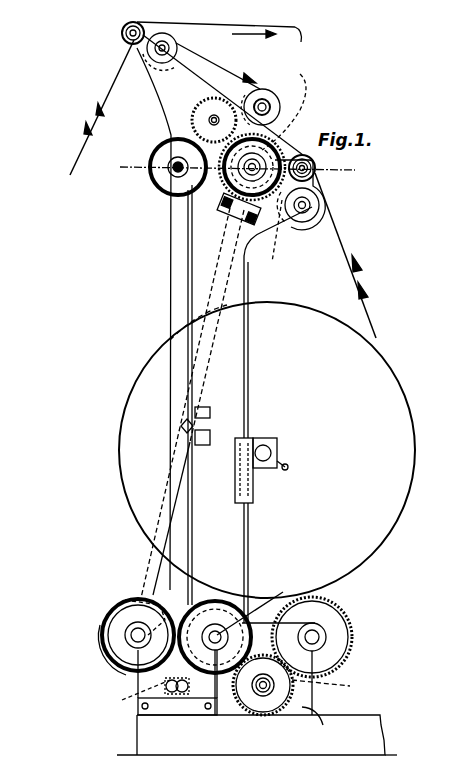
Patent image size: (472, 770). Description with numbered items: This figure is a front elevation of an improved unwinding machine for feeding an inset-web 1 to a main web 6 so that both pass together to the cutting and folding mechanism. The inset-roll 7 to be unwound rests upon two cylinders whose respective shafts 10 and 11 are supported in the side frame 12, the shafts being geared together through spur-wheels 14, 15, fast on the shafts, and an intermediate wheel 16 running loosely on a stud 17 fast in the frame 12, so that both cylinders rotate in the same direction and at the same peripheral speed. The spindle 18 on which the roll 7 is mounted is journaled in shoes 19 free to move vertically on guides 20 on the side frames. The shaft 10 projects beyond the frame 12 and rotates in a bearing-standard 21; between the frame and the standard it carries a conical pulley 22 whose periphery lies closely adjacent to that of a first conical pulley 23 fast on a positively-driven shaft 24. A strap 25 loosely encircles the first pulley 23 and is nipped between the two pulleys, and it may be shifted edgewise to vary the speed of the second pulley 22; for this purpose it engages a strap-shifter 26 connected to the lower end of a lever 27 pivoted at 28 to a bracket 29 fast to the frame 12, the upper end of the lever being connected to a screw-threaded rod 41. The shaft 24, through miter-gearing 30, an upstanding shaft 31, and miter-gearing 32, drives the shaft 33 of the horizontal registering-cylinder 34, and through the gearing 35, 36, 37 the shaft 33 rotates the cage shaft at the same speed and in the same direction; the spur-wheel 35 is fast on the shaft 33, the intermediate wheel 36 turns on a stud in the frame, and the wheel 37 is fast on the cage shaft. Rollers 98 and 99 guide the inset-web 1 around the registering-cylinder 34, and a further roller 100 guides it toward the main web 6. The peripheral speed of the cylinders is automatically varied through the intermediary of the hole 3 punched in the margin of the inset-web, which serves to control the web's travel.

The inset-web 1 is at (257, 80).
The hole 3 is at (236, 167).
The main web 6 is at (58, 150).
The inset-roll 7 is at (267, 450).
The shaft 10 is at (256, 602).
The shaft 11 is at (320, 643).
The side frame 12 is at (242, 467).
The spur-wheel 14 is at (150, 155).
The spur-wheel 15 is at (345, 638).
The intermediate wheel 16 is at (333, 691).
The stud 17 is at (275, 688).
The spindle 18 is at (272, 456).
The shoe 19 is at (254, 488).
The guide 20 is at (250, 517).
The bearing-standard 21 is at (200, 690).
The conical pulley 22 is at (215, 658).
The conical pulley 23 is at (126, 635).
The shaft 24 is at (126, 648).
The strap 25 is at (110, 676).
The strap-shifter 26 is at (146, 696).
The lever 27 is at (192, 540).
The pivot 28 is at (181, 426).
The bracket 29 is at (216, 411).
The miter-gearing 30 is at (112, 601).
The upstanding shaft 31 is at (152, 570).
The miter-gearing 32 is at (300, 204).
The shaft 33 is at (230, 220).
The registering-cylinder 34 is at (278, 322).
The spur-wheel 35 is at (295, 161).
The intermediate wheel 36 is at (207, 114).
The wheel 37 is at (154, 319).
The screw-threaded rod 41 is at (168, 172).
The roller 98 is at (320, 212).
The roller 99 is at (280, 106).
The roller 100 is at (178, 48).